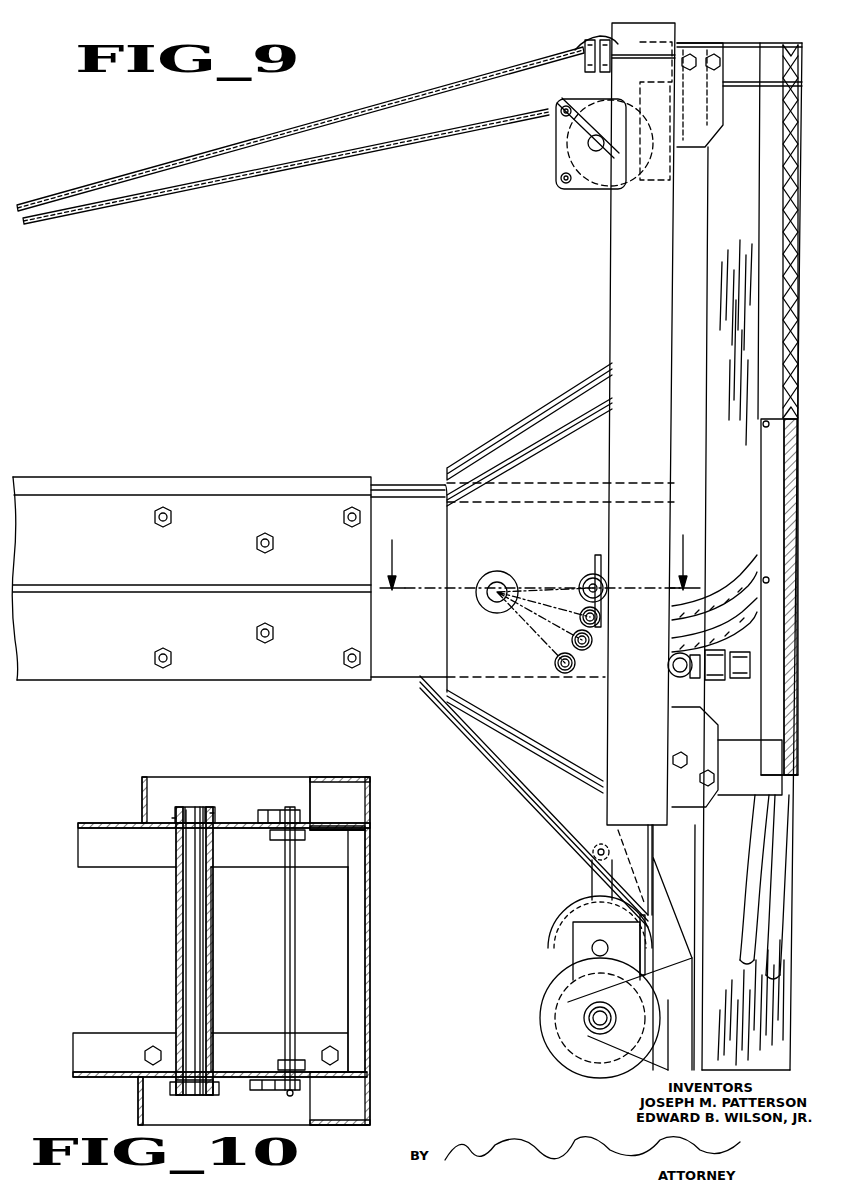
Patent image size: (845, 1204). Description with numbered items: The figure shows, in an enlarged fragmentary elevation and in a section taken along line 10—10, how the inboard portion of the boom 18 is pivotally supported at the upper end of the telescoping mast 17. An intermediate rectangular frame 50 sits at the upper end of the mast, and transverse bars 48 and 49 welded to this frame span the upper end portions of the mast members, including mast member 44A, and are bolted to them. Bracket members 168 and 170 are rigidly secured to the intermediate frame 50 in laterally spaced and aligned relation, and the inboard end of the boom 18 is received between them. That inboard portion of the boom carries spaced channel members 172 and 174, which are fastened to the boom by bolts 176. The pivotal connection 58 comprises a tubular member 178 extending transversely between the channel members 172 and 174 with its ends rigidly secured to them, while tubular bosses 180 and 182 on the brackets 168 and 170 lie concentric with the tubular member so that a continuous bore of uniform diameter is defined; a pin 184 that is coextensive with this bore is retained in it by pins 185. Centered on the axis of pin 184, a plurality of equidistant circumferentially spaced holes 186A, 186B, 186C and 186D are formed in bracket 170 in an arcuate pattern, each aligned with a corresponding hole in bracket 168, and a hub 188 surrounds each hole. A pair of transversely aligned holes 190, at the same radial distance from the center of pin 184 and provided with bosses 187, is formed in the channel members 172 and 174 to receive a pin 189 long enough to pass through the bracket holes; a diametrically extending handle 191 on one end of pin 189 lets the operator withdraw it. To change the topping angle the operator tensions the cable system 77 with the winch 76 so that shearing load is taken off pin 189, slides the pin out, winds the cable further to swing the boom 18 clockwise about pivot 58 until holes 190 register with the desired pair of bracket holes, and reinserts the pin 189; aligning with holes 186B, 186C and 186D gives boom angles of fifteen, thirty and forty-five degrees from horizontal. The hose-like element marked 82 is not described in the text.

In FIG. 9, the mast 17 is at (712, 328).
In FIG. 9, the boom 18 is at (104, 475).
In FIG. 10, the boom 18 is at (96, 820).
In FIG. 9, the mast member 44A is at (712, 306).
In FIG. 9, the transverse bar 48 is at (700, 100).
In FIG. 9, the transverse bar 49 is at (690, 735).
In FIG. 9, the intermediate frame 50 is at (640, 265).
In FIG. 10, the intermediate frame 50 is at (368, 792).
In FIG. 9, the pivotal connection 58 is at (497, 571).
In FIG. 10, the pivotal connection 58 is at (190, 1098).
In FIG. 9, the winch 76 is at (600, 985).
In FIG. 9, the cable system 77 is at (217, 181).
In FIG. 9, the hoses 82 is at (745, 928).
In FIG. 9, the section line 10— 10 is at (540, 562).
In FIG. 9, the bracket member 168 is at (575, 402).
In FIG. 10, the bracket member 168 is at (218, 795).
In FIG. 9, the bracket member 170 is at (545, 450).
In FIG. 10, the bracket member 170 is at (197, 1120).
In FIG. 9, the channel member 172 is at (408, 485).
In FIG. 10, the channel member 172 is at (90, 847).
In FIG. 9, the channel member 174 is at (424, 648).
In FIG. 10, the channel member 174 is at (90, 1042).
In FIG. 9, the bolts 176 is at (170, 517).
In FIG. 10, the tubular member 178 is at (178, 922).
In FIG. 10, the tubular boss 180 is at (180, 808).
In FIG. 10, the tubular boss 182 is at (168, 1082).
In FIG. 9, the pin 184 is at (490, 600).
In FIG. 10, the pin 184 is at (192, 945).
In FIG. 10, the pins 185 is at (173, 818).
In FIG. 9, the hole 186A is at (604, 582).
In FIG. 9, the hole 186B is at (600, 617).
In FIG. 9, the hole 186C is at (592, 640).
In FIG. 9, the hole 186D is at (575, 663).
In FIG. 10, the bosses 187 is at (302, 842).
In FIG. 9, the hub 188 is at (584, 610).
In FIG. 10, the hub 188 is at (290, 810).
In FIG. 9, the pin 189 is at (590, 580).
In FIG. 10, the pin 189 is at (290, 958).
In FIG. 10, the holes 190 is at (286, 838).
In FIG. 9, the handle 191 is at (596, 555).
In FIG. 10, the handle 191 is at (296, 1095).